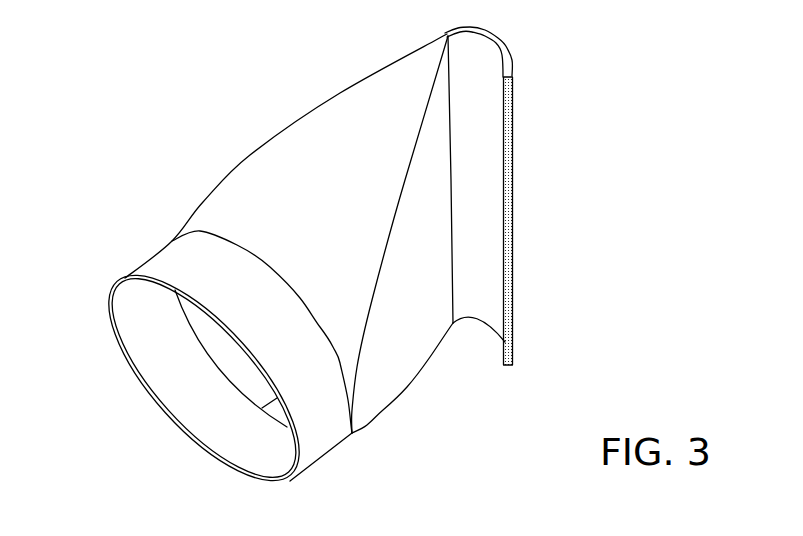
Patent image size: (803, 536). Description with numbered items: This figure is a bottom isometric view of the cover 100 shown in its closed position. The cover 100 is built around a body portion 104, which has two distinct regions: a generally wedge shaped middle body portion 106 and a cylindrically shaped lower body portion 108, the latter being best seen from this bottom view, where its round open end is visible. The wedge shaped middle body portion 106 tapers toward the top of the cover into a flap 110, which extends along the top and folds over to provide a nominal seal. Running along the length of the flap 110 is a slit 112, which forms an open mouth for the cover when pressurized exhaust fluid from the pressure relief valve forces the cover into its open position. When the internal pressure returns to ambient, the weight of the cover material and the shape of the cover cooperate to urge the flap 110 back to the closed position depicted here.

The cover 100 is at (349, 261).
The body portion 104 is at (238, 185).
The middle body portion 106 is at (410, 318).
The lower body portion 108 is at (302, 442).
The flap 110 is at (505, 40).
The slit 112 is at (514, 345).